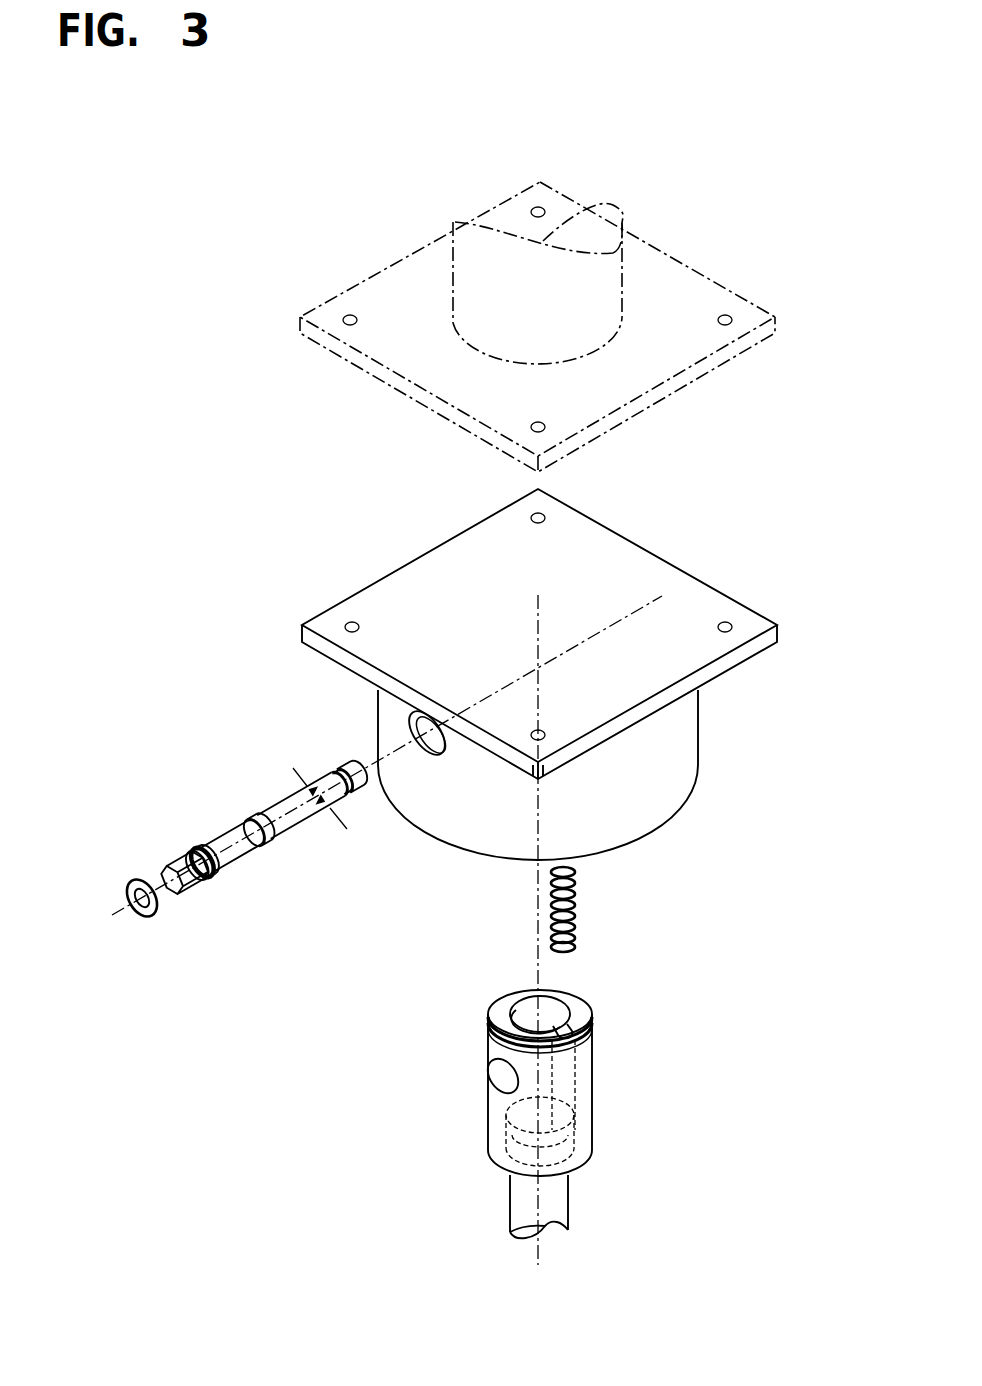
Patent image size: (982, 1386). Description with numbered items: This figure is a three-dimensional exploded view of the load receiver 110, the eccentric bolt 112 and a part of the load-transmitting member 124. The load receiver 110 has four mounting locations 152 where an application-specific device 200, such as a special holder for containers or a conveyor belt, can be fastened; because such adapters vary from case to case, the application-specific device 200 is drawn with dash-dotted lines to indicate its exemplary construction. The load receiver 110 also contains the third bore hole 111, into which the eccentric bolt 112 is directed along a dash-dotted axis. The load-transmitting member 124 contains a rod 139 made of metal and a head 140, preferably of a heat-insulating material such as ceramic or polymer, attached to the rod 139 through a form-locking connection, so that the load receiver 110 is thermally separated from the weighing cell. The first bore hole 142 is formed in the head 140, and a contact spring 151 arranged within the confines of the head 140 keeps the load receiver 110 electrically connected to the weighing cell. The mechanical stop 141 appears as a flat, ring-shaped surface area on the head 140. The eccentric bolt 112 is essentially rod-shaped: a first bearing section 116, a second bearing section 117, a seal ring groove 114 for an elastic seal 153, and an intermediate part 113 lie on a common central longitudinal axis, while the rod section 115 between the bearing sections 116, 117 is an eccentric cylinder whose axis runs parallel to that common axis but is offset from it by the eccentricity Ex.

The application-specific device 200 is at (405, 300).
The load receiver 110 is at (448, 882).
The third bore hole 111 is at (418, 747).
The eccentric bolt 112 is at (211, 943).
The intermediate part 113 is at (213, 863).
The seal ring groove 114 is at (137, 840).
The rod section 115 is at (290, 793).
The first bearing section 116 is at (250, 817).
The second bearing section 117 is at (340, 770).
The load-transmitting member 124 is at (654, 1113).
The rod 139 is at (545, 1200).
The head 140 is at (654, 1113).
The mechanical stop 141 is at (580, 1013).
The first bore hole 142 is at (500, 1087).
The contact spring 151 is at (577, 907).
The mounting location 152 is at (733, 624).
The elastic seal 153 is at (127, 883).